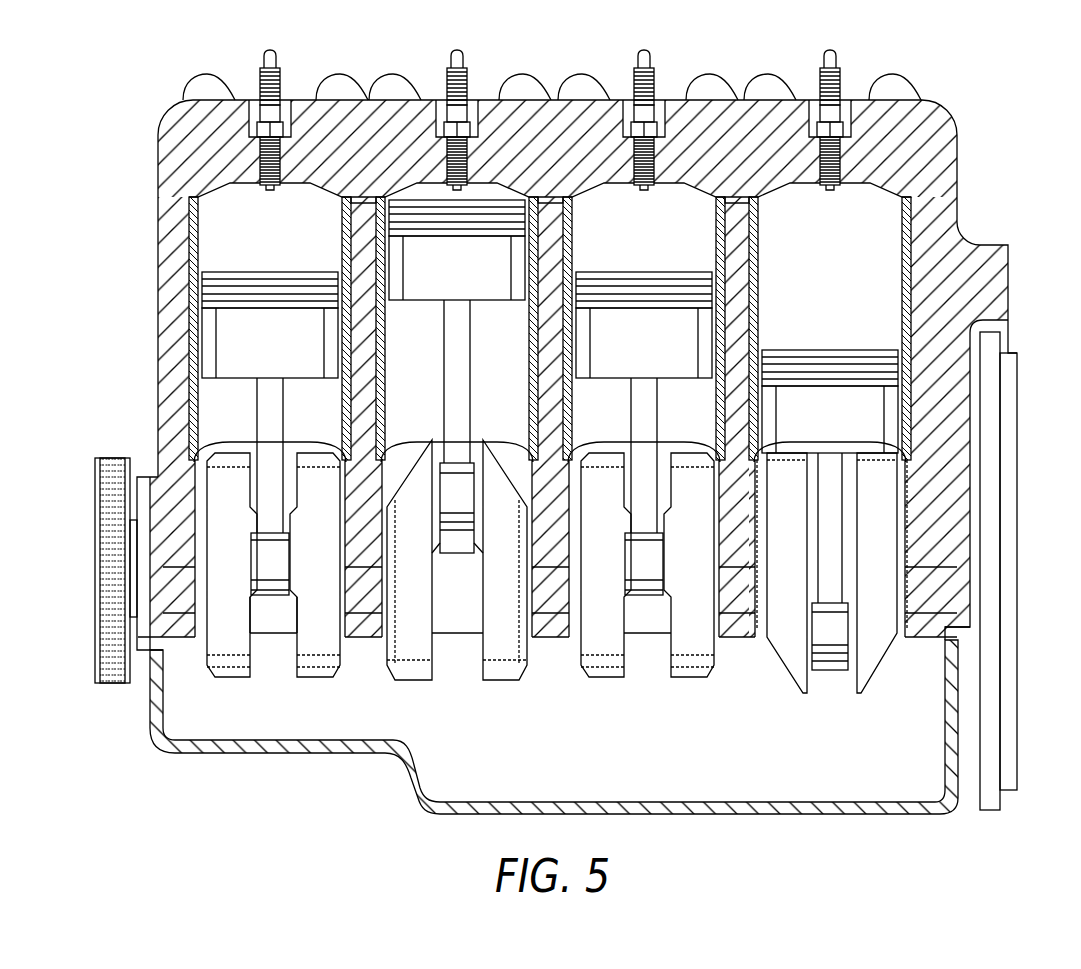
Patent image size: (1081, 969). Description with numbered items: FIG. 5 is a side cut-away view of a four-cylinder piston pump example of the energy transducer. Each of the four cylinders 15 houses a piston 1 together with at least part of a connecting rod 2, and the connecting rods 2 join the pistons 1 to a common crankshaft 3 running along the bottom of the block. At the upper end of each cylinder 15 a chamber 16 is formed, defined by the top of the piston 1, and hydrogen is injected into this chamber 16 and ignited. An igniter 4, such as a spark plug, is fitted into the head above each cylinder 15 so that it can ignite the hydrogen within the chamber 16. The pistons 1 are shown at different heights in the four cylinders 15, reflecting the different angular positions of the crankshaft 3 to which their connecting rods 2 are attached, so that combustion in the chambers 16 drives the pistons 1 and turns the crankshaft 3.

The piston 1 is at (261, 359).
The connecting rod 2 is at (270, 428).
The crankshaft 3 is at (275, 597).
The igniter 4 is at (264, 96).
The cylinder 15 is at (256, 251).
The chamber 16 is at (237, 187).